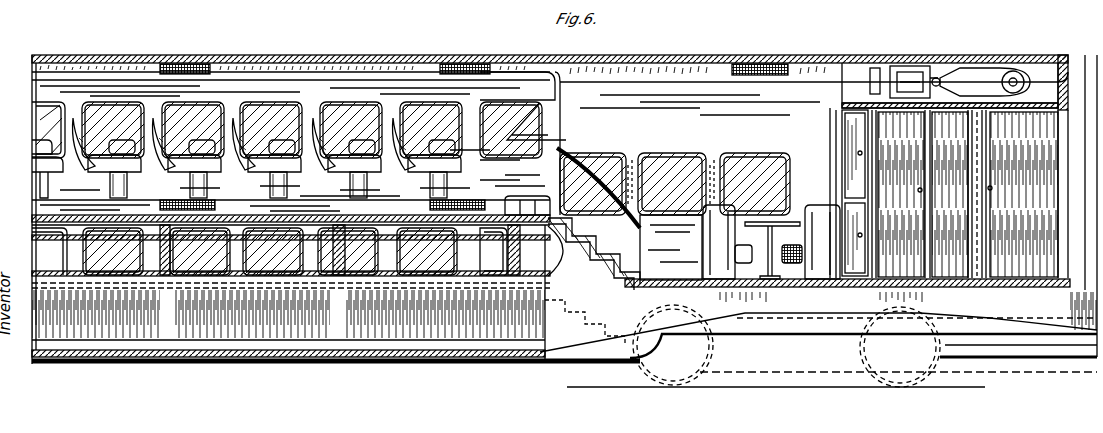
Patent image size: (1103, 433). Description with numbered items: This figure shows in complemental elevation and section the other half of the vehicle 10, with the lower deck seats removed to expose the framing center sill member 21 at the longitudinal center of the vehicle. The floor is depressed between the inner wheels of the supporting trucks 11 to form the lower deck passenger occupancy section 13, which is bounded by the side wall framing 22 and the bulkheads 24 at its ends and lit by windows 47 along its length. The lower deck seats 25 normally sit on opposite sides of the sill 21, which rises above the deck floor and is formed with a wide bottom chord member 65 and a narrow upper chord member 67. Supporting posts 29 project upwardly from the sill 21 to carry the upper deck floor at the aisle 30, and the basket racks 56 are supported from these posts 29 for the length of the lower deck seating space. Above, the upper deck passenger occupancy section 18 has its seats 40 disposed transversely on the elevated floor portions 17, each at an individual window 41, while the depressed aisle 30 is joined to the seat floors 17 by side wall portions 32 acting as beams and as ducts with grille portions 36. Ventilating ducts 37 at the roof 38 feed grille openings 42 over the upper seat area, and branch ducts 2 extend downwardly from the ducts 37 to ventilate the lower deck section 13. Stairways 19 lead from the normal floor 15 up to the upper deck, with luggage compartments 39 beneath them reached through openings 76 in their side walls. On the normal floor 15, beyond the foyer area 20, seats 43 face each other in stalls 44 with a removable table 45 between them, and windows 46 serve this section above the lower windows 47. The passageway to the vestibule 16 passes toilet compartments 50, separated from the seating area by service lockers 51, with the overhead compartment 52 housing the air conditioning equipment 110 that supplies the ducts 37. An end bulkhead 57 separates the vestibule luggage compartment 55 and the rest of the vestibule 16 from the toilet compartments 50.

The branch duct 2 is at (521, 56).
The vehicle 10 is at (56, 55).
The supporting truck 11 is at (660, 372).
The lower deck passenger occupancy section 13 is at (445, 325).
The normal floor 15 is at (897, 279).
The vestibule 16 is at (1040, 280).
The elevated floor portion 17 is at (378, 200).
The upper deck passenger occupancy section 18 is at (232, 80).
The stairway 19 is at (586, 237).
The foyer area 20 is at (671, 247).
The framing center sill member 21 is at (1030, 316).
The side wall framing 22 is at (722, 158).
The bulkhead 24 is at (558, 124).
The lower deck seat 25 is at (312, 262).
The supporting post 29 is at (132, 245).
The upper deck floor aisle 30 is at (145, 215).
The side wall portion 32 is at (295, 200).
The grille portion 36 is at (218, 206).
The ventilating duct 37 is at (316, 72).
The roof 38 is at (98, 55).
The luggage compartment 39 is at (522, 342).
The upper deck seat 40 is at (88, 130).
The window 41 is at (275, 115).
The grille opening 42 is at (190, 64).
The seat 43 is at (742, 280).
The stall 44 is at (722, 240).
The removable table 45 is at (771, 280).
The window 46 is at (612, 158).
The window 47 is at (100, 264).
The toilet compartment 50 is at (949, 193).
The service locker 51 is at (855, 205).
The compartment 52 is at (1033, 62).
The luggage compartment 55 is at (995, 194).
The basket rack 56 is at (128, 248).
The end bulkhead 57 is at (982, 150).
The bottom chord member 65 is at (166, 330).
The upper chord member 67 is at (277, 300).
The opening 76 is at (537, 216).
The air conditioning equipment 110 is at (975, 72).